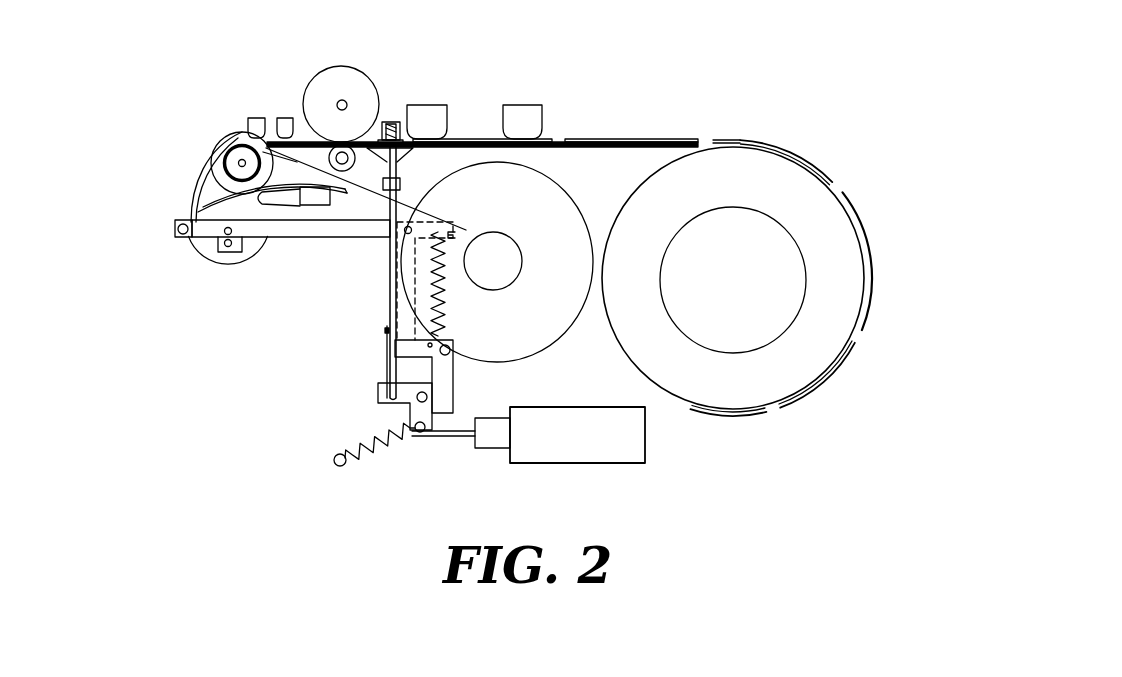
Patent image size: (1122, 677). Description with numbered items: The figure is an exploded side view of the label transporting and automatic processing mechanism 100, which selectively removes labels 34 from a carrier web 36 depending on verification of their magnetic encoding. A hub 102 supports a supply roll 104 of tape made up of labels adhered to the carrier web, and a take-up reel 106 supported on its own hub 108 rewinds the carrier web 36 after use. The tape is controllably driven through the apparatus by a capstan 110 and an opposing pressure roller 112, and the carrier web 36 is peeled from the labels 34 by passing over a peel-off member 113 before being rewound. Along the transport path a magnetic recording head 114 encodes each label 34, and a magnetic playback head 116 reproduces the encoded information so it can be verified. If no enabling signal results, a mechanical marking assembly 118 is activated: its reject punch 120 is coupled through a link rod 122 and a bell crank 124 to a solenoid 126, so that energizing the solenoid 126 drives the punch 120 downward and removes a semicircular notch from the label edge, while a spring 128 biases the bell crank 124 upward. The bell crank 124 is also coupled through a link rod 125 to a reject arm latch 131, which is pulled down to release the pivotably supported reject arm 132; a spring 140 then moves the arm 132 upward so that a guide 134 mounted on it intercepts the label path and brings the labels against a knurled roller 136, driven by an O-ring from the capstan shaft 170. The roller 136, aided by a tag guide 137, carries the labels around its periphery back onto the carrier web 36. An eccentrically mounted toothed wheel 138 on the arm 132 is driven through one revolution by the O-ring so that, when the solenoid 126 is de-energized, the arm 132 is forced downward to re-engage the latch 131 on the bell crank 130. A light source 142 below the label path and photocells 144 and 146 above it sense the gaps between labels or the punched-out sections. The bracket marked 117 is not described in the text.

The mechanism 100 is at (302, 298).
The hub 102 is at (803, 271).
The supply roll 104 is at (830, 200).
The labels 34 is at (303, 143).
The take-up reel 106 is at (562, 198).
The hub 108 is at (509, 276).
The carrier web 36 is at (469, 226).
The spring 140 is at (449, 305).
The bracket 117 is at (458, 342).
The bell crank 130 is at (457, 377).
The bell crank 124 is at (389, 409).
The solenoid 126 is at (575, 463).
The spring 128 is at (375, 452).
The link rod 122 is at (390, 293).
The link rod 125 is at (385, 352).
The reject arm latch 131 is at (386, 331).
The reject punch 120 is at (382, 122).
The mechanical marking assembly 118 is at (395, 173).
The magnetic playback head 116 is at (426, 105).
The magnetic recording head 114 is at (523, 105).
The pressure roller 112 is at (345, 78).
The capstan 110 is at (351, 168).
The photocell 144 is at (254, 117).
The photocell 146 is at (283, 118).
The knurled roller 136 is at (240, 149).
The guide 134 is at (195, 198).
The peel-off member 113 is at (295, 155).
The capstan shaft 170 is at (342, 171).
The tag guide 137 is at (272, 216).
The light source 142 is at (286, 202).
The reject arm 132 is at (345, 232).
The toothed wheel 138 is at (215, 255).